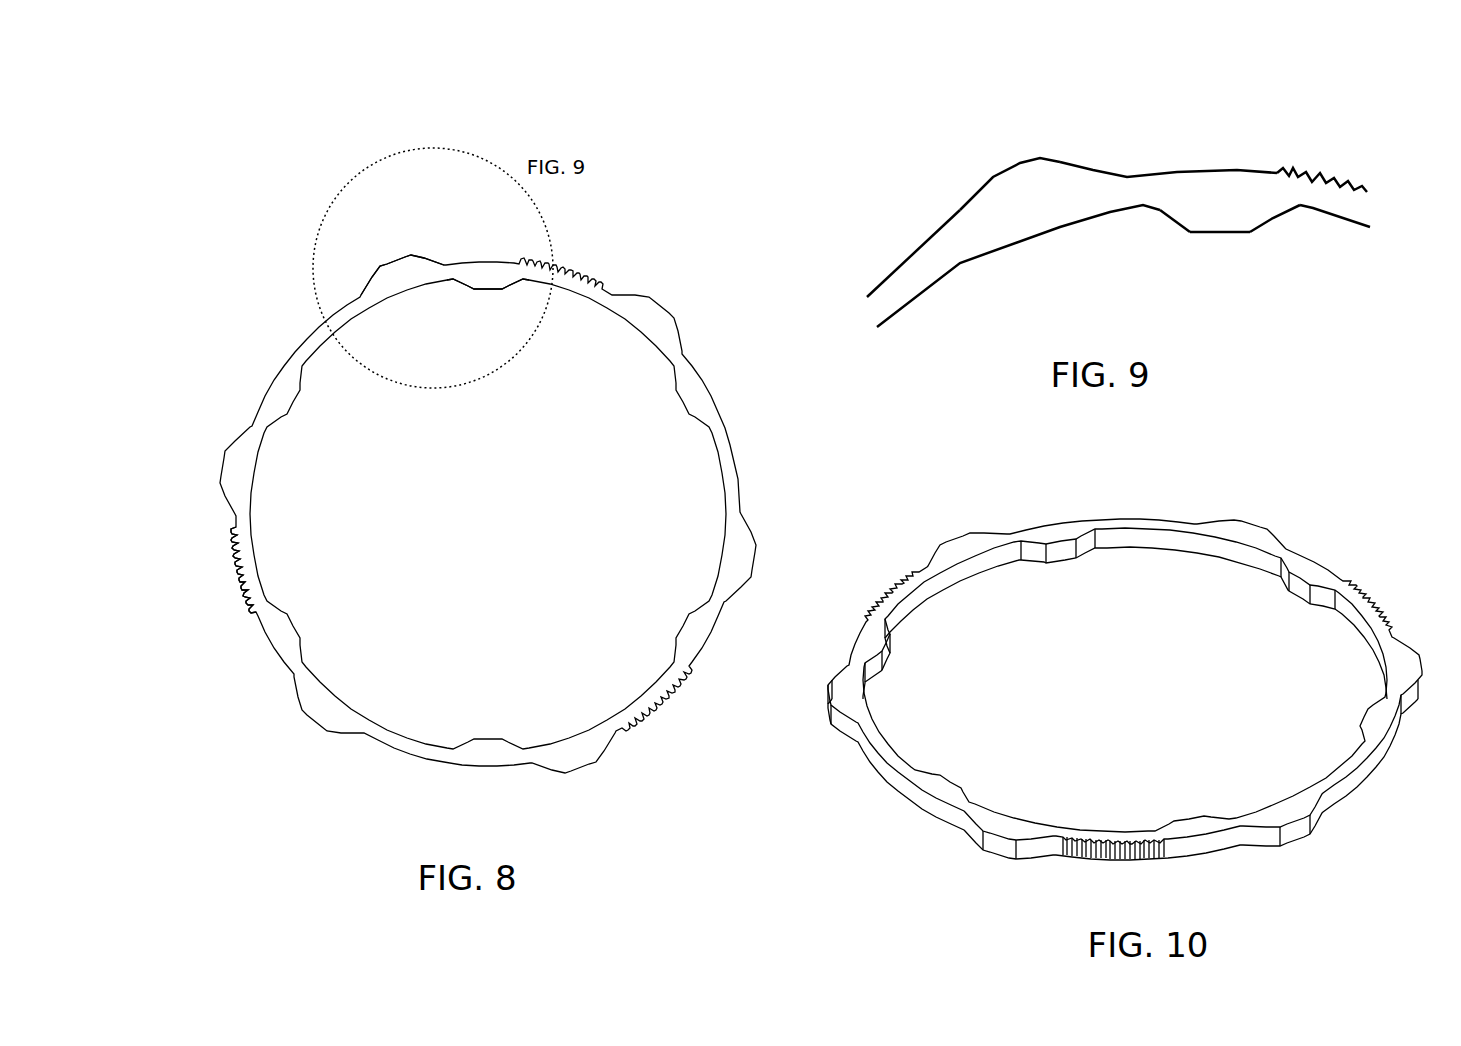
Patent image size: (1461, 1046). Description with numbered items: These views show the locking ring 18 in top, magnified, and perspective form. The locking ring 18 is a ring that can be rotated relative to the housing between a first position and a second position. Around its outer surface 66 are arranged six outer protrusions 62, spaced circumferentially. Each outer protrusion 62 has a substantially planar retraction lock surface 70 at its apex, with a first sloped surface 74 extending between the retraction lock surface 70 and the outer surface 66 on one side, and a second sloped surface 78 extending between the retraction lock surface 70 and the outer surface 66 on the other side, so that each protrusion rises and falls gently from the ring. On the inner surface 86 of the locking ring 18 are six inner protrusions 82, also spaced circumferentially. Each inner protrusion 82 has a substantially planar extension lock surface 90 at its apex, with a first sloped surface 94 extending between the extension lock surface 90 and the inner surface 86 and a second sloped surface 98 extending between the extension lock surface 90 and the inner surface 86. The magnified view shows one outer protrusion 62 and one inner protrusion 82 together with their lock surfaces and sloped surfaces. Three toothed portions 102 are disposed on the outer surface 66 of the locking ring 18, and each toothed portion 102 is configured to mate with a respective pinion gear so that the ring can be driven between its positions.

In FIG. 8, the locking ring 18 is at (450, 483).
In FIG. 10, the locking ring 18 is at (1125, 680).
In FIG. 8, the outer protrusion 62 is at (390, 249).
In FIG. 9, the outer protrusion 62 is at (1118, 183).
In FIG. 8, the outer surface 66 is at (313, 330).
In FIG. 10, the outer surface 66 is at (910, 807).
In FIG. 9, the retraction lock surface 70 is at (1010, 167).
In FIG. 9, the first sloped surface 74 is at (1082, 171).
In FIG. 9, the second sloped surface 78 is at (960, 210).
In FIG. 8, the inner protrusion 82 is at (485, 297).
In FIG. 9, the inner protrusion 82 is at (1222, 257).
In FIG. 8, the inner surface 86 is at (310, 357).
In FIG. 10, the inner surface 86 is at (903, 613).
In FIG. 9, the extension lock surface 90 is at (1227, 236).
In FIG. 9, the first sloped surface 94 is at (1275, 226).
In FIG. 9, the second sloped surface 98 is at (1173, 225).
In FIG. 8, the toothed portion 102 is at (236, 578).
In FIG. 10, the toothed portion 102 is at (1103, 862).